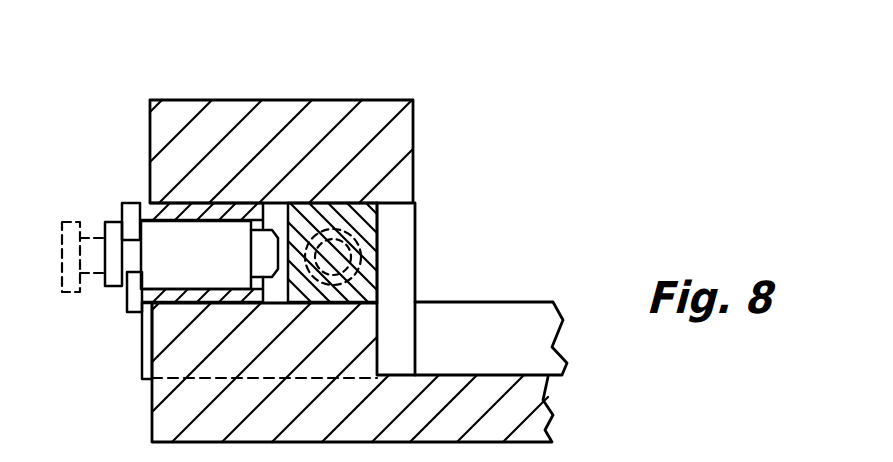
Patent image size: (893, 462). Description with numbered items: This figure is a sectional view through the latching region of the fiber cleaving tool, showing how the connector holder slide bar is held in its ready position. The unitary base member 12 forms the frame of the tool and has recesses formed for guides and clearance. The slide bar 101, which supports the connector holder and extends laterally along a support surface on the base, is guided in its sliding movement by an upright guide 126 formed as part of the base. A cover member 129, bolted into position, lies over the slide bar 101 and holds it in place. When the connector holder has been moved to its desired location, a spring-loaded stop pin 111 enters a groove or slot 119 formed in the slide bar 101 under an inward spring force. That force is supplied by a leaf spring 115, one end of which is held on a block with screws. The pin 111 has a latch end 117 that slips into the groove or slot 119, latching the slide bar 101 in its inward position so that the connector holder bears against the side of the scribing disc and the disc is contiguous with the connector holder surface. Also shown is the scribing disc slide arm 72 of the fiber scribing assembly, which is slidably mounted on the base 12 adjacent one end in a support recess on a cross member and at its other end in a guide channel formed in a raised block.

The cover member 129 is at (228, 108).
The groove or slot 119 is at (277, 217).
The spring-loaded stop pin 111 is at (187, 230).
The leaf spring 115 is at (124, 212).
The latch end 117 is at (267, 255).
The slide bar 101 is at (366, 223).
The upright guide 126 is at (401, 253).
The scribing disc slide arm 72 is at (478, 322).
The base member 12 is at (178, 407).